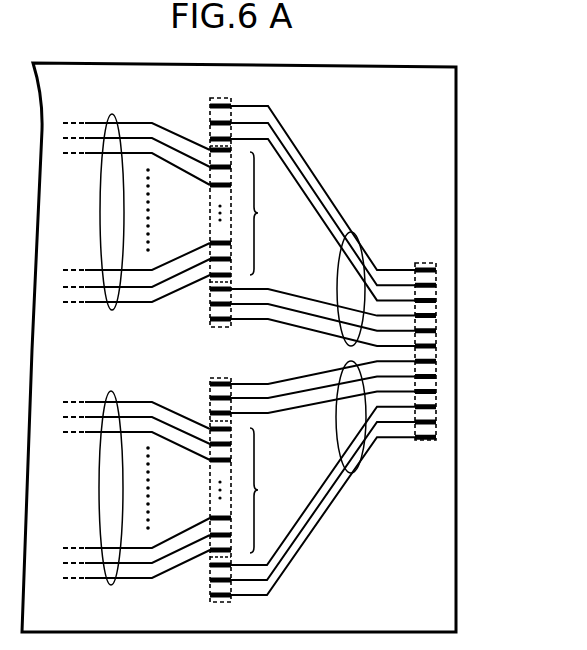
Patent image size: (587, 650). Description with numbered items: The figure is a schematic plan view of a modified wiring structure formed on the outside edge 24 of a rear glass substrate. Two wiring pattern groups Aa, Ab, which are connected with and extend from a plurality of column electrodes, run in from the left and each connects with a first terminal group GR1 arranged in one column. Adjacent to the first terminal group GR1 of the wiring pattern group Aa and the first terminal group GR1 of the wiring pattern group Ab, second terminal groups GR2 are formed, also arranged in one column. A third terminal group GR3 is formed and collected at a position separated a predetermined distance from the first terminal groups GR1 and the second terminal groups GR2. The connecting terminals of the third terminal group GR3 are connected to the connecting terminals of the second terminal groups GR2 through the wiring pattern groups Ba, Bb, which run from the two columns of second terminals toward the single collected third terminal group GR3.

The outside edge 24 is at (456, 150).
The wiring pattern group Aa is at (100, 207).
The wiring pattern group Ab is at (100, 494).
The wiring pattern group Ba is at (338, 282).
The wiring pattern group Bb is at (338, 428).
The first terminal group GR1 is at (275, 352).
The second terminal group GR2 is at (234, 98).
The third terminal group GR3 is at (423, 261).